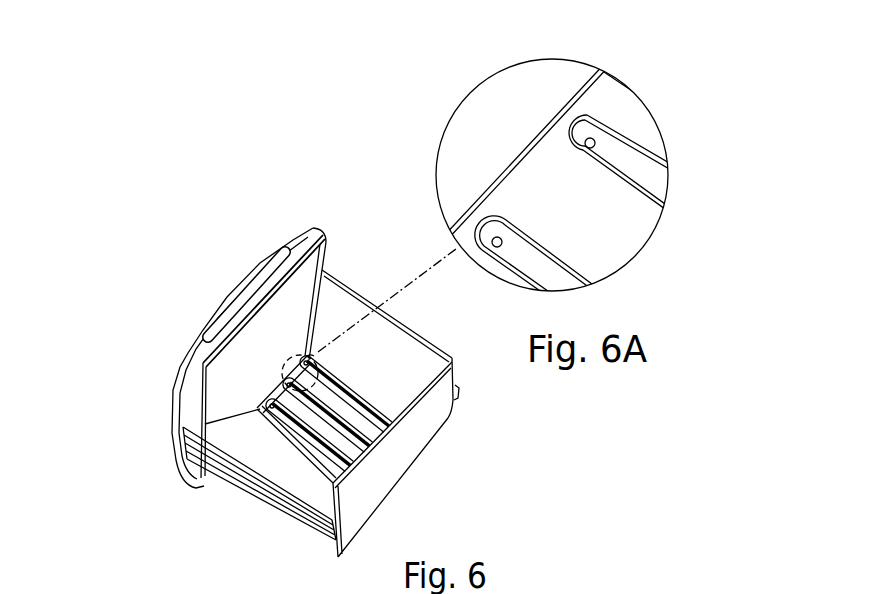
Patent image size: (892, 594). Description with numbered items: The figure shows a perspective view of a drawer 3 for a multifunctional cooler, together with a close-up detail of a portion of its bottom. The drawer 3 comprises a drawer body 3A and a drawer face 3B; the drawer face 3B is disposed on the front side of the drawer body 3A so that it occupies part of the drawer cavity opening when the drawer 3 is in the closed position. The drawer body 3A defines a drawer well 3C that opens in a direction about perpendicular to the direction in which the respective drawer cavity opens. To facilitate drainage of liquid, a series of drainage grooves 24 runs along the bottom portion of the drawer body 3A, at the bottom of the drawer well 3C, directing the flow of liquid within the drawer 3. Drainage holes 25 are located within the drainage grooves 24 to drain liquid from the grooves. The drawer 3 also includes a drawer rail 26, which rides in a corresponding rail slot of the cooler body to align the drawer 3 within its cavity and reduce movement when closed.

In FIG. 6, the drawer 3 is at (214, 262).
In FIG. 6, the drawer body 3A is at (420, 448).
In FIG. 6, the drawer face 3B is at (302, 250).
In FIG. 6, the drawer well 3C is at (243, 394).
In FIG. 6, the drainage grooves 24 is at (358, 398).
In FIG. 6A, the drainage grooves 24 is at (648, 180).
In FIG. 6A, the drainage holes 25 is at (597, 135).
In FIG. 6, the drawer rails 26 is at (268, 506).